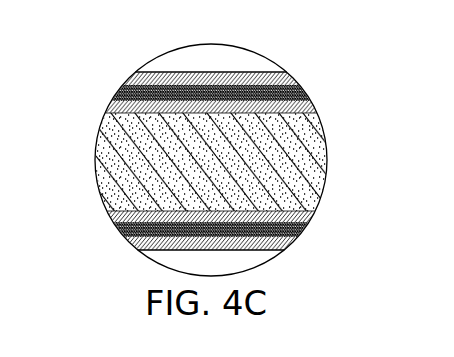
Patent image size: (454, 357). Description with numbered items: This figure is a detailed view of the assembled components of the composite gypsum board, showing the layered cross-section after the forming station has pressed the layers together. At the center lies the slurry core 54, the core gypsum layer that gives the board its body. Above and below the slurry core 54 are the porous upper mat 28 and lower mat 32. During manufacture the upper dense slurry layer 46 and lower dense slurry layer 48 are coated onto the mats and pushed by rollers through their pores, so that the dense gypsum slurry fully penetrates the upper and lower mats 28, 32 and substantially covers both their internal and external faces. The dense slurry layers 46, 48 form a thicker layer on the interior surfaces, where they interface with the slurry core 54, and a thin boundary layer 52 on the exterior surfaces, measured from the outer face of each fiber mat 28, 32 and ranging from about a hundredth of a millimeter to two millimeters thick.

The upper mat 28 is at (303, 92).
The lower mat 32 is at (300, 231).
The upper dense slurry layer 46 is at (125, 83).
The lower dense slurry layer 48 is at (112, 215).
The thin boundary layer 52 is at (277, 72).
The slurry core 54 is at (320, 153).